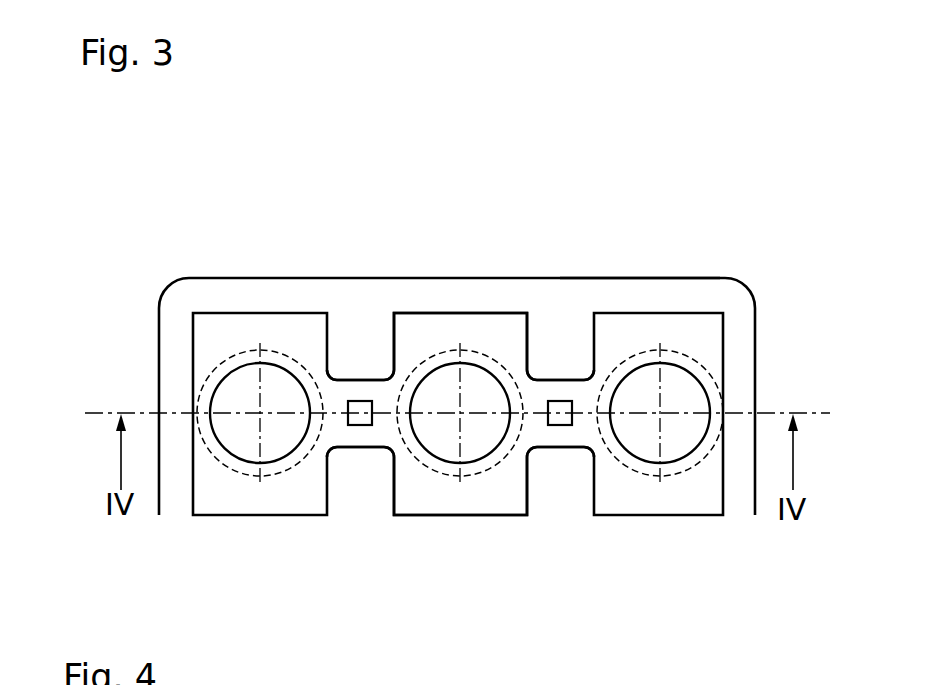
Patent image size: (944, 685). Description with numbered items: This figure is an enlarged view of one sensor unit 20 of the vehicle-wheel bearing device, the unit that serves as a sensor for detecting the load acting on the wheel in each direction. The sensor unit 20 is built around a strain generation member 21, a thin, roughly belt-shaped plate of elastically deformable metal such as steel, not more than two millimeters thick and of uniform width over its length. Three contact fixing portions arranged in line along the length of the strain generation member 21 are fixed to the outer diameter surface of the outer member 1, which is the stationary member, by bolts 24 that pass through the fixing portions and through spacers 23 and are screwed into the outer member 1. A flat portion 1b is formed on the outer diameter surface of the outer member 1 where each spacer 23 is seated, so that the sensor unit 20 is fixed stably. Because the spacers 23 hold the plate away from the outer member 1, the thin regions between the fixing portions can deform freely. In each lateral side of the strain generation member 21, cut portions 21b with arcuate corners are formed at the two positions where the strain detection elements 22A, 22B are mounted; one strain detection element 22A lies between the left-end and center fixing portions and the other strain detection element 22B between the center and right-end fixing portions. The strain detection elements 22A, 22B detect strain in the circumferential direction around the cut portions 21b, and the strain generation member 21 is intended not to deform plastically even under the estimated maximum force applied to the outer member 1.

The outer member 1 is at (767, 150).
The flat portion 1b is at (617, 293).
The sensor unit 20 is at (333, 286).
The strain generation member 21 is at (490, 328).
The cut portion 21b is at (360, 378).
The strain detection element 22A is at (352, 426).
The strain detection element 22B is at (553, 427).
The spacer 23 is at (230, 357).
The bolt 24 is at (235, 395).